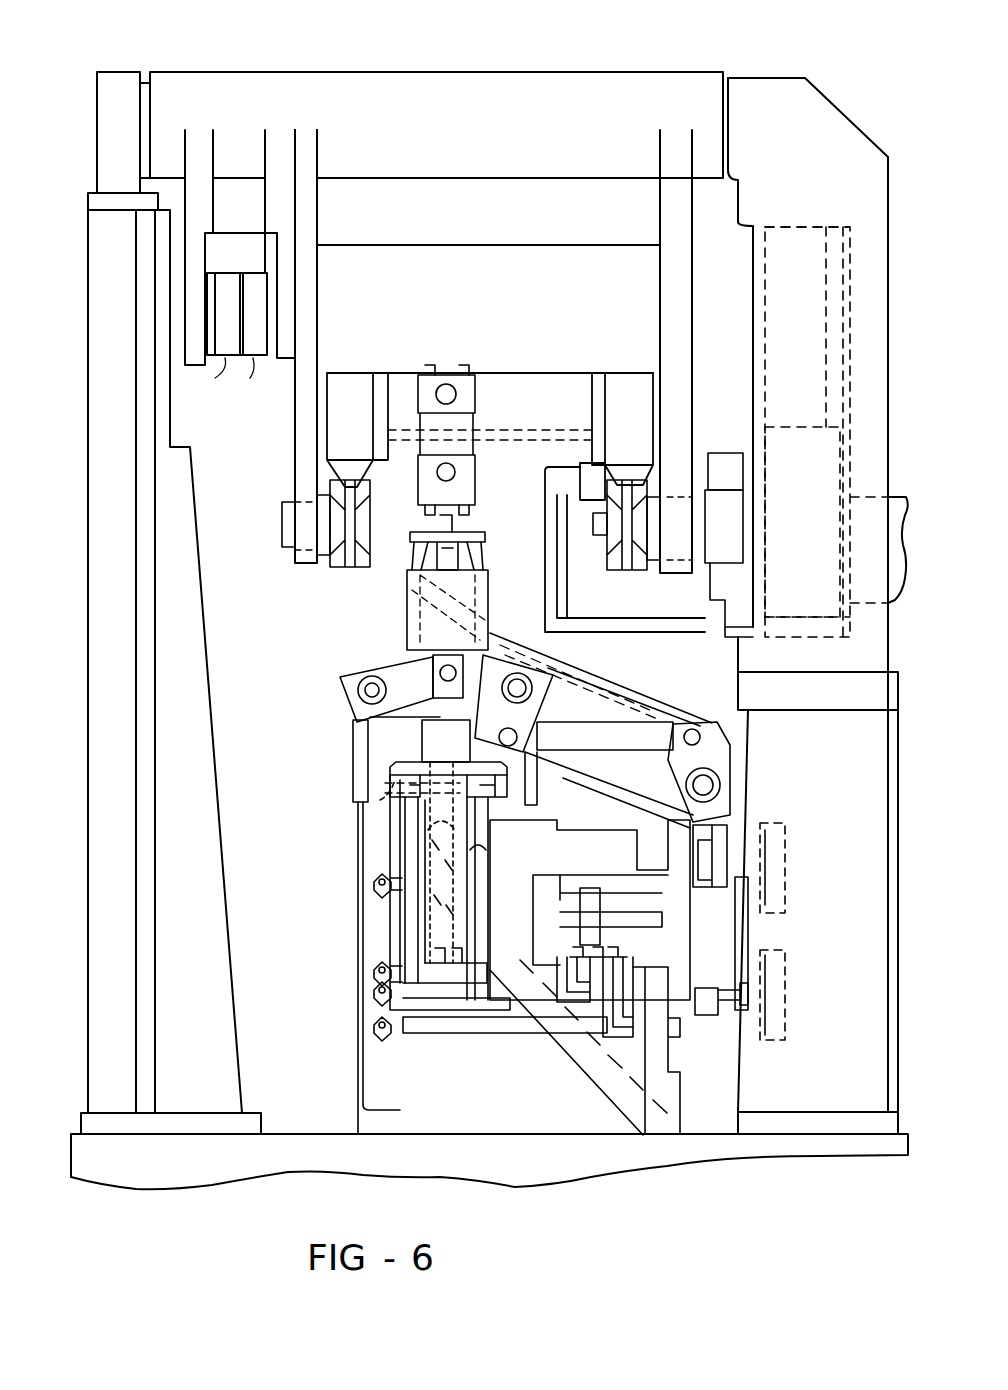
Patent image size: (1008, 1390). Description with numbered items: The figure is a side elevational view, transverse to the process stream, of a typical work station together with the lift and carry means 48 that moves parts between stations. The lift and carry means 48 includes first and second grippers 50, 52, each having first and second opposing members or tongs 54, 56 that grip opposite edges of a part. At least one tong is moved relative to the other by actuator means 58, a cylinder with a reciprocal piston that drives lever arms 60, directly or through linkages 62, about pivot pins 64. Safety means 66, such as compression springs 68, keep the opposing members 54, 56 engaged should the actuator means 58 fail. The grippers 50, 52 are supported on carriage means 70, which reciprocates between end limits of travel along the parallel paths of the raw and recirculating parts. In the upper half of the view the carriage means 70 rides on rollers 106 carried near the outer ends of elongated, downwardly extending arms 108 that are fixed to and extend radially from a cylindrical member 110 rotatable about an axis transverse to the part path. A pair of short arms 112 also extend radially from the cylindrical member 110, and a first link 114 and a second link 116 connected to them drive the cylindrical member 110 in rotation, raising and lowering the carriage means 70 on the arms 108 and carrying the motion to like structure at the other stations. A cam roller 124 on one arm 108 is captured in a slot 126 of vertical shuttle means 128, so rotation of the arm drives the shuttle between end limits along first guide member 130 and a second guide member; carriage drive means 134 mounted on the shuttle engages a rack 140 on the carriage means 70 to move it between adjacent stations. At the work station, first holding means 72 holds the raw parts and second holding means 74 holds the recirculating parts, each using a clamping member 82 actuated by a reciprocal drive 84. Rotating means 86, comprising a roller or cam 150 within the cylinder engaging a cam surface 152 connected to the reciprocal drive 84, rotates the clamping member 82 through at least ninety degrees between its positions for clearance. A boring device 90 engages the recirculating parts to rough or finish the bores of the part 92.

The lift and carry means 48 is at (256, 40).
The first gripper 50 is at (312, 709).
The second gripper 52 is at (740, 800).
The first opposing member 54 is at (372, 722).
The second opposing member 56 is at (532, 752).
The actuator means 58 is at (483, 412).
The lever arm 60 is at (380, 662).
The linkage 62 is at (597, 718).
The pivot pin 64 is at (340, 680).
The safety means 66 is at (486, 560).
The compression spring 68 is at (486, 570).
The carriage means 70 is at (553, 372).
The first holding means 72 is at (391, 765).
The second holding means 74 is at (742, 963).
The clamping member 82 is at (395, 752).
The reciprocal drive 84 is at (423, 910).
The rotating means 86 is at (407, 822).
The boring device 90 is at (790, 862).
The finished part 92 is at (385, 802).
The roller 106 is at (332, 578).
The elongated arm 108 is at (660, 267).
The cylindrical member 110 is at (428, 68).
The short arm 112 is at (192, 264).
The first link 114 is at (225, 363).
The second link 116 is at (250, 363).
The cam roller 124 is at (725, 545).
The slot 126 is at (743, 503).
The vertical shuttle means 128 is at (730, 418).
The first guide member 130 is at (826, 265).
The carriage drive means 134 is at (690, 632).
The rack 140 is at (552, 465).
The roller or cam 150 is at (443, 840).
The cam surface 152 is at (440, 845).